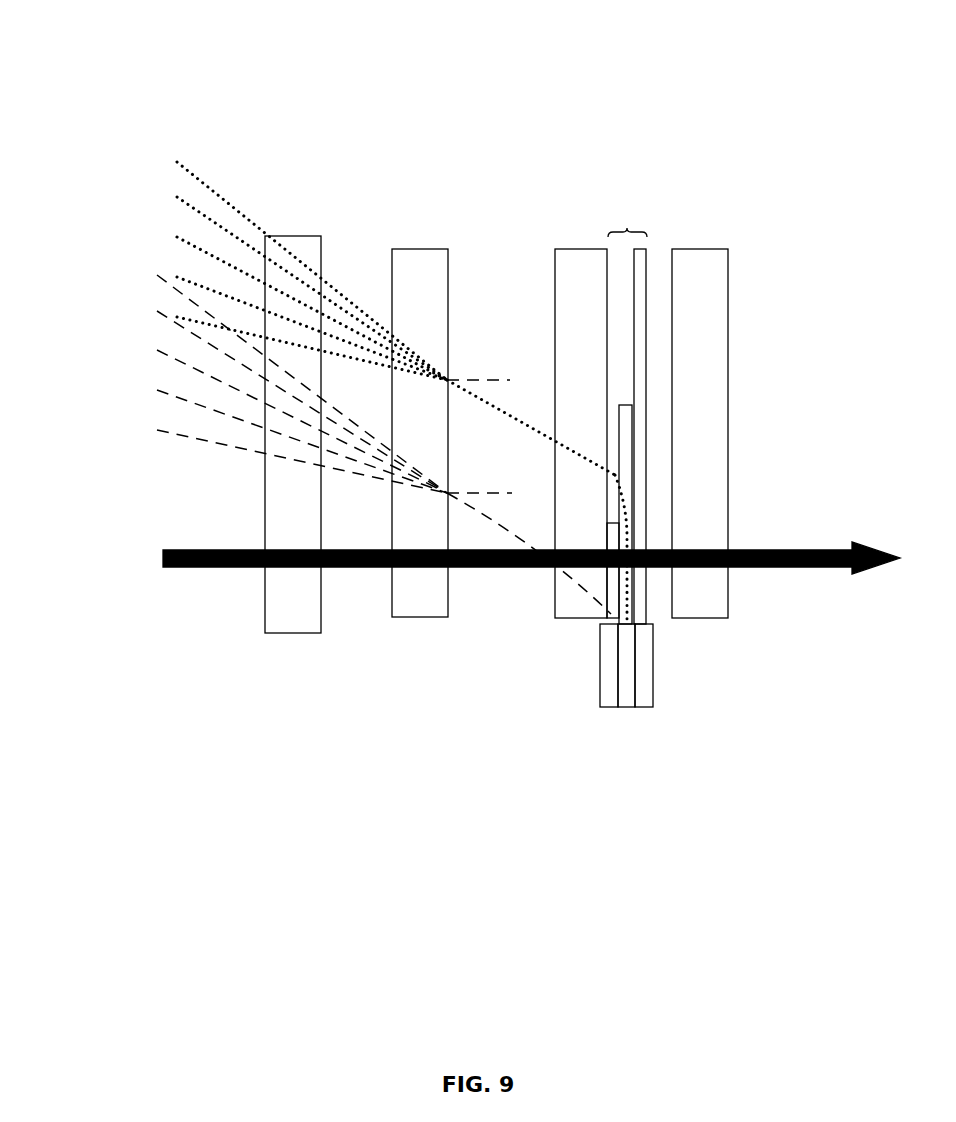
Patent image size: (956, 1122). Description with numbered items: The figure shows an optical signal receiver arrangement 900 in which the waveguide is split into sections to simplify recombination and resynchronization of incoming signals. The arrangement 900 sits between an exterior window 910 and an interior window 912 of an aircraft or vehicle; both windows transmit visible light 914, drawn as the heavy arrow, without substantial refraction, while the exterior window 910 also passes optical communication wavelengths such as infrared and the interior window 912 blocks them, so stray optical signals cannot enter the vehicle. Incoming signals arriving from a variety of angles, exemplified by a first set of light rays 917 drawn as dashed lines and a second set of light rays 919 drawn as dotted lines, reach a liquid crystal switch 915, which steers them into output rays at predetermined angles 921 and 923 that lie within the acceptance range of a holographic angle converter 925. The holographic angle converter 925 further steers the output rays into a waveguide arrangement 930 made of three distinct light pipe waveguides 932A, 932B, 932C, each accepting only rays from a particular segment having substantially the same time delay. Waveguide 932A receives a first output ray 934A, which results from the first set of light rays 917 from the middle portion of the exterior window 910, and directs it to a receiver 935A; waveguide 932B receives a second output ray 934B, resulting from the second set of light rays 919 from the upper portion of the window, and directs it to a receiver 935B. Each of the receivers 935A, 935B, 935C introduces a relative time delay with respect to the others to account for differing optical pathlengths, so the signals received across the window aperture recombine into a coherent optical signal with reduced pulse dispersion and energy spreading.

The optical signal receiver arrangement 900 is at (702, 124).
The exterior window 910 is at (303, 236).
The interior window 912 is at (712, 618).
The visible light 914 is at (187, 568).
The liquid crystal switch 915 is at (420, 249).
The first set of light rays 917 is at (120, 263).
The second set of light rays 919 is at (160, 138).
The predetermined angle 921 is at (474, 496).
The predetermined angle 923 is at (473, 384).
The holographic angle converter 925 is at (572, 249).
The waveguide arrangement 930 is at (628, 218).
The light pipe waveguide 932A is at (611, 577).
The light pipe waveguide 932B is at (625, 478).
The light pipe waveguide 932C is at (643, 332).
The first output ray 934A is at (498, 524).
The second output ray 934B is at (540, 430).
The receiver 935A is at (602, 708).
The receiver 935B is at (623, 708).
The receiver 935C is at (641, 708).